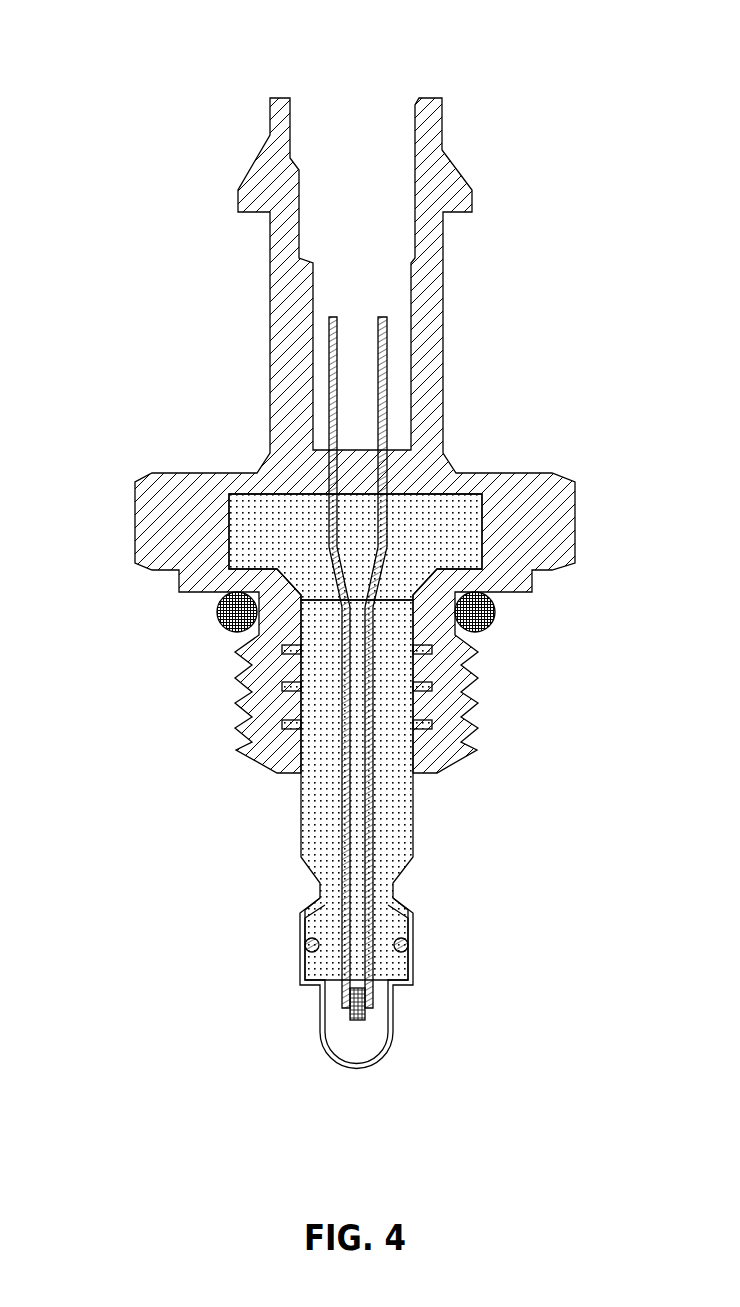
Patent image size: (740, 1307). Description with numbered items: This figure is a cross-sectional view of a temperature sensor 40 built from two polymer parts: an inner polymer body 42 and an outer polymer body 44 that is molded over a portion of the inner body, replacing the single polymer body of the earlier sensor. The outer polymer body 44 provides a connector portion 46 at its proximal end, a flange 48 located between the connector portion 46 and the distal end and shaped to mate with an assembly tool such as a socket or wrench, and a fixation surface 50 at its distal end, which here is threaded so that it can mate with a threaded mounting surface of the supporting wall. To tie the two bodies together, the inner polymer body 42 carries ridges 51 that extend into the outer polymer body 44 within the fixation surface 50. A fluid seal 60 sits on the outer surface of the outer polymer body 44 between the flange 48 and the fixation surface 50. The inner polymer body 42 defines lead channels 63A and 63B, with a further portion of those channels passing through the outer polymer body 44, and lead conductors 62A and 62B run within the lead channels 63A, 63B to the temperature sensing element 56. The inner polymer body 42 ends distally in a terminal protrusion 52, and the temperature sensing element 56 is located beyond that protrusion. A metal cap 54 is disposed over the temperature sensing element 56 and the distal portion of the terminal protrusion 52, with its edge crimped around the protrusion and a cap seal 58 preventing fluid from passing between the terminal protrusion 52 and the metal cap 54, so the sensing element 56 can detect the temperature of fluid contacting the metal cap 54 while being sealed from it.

The temperature sensor 40 is at (128, 96).
The inner polymer body 42 is at (465, 505).
The outer polymer body 44 is at (273, 431).
The connector portion 46 is at (242, 296).
The flange 48 is at (126, 526).
The fixation surface 50 is at (226, 702).
The ridges 51 is at (441, 651).
The terminal protrusion 52 is at (422, 832).
The metal cap 54 is at (347, 1067).
The temperature sensing element 56 is at (350, 1013).
The cap seal 58 is at (308, 946).
The fluid seal 60 is at (216, 612).
The lead conductor 62A is at (329, 318).
The lead conductor 62B is at (381, 318).
The lead channel 63A is at (338, 782).
The lead channel 63B is at (358, 805).